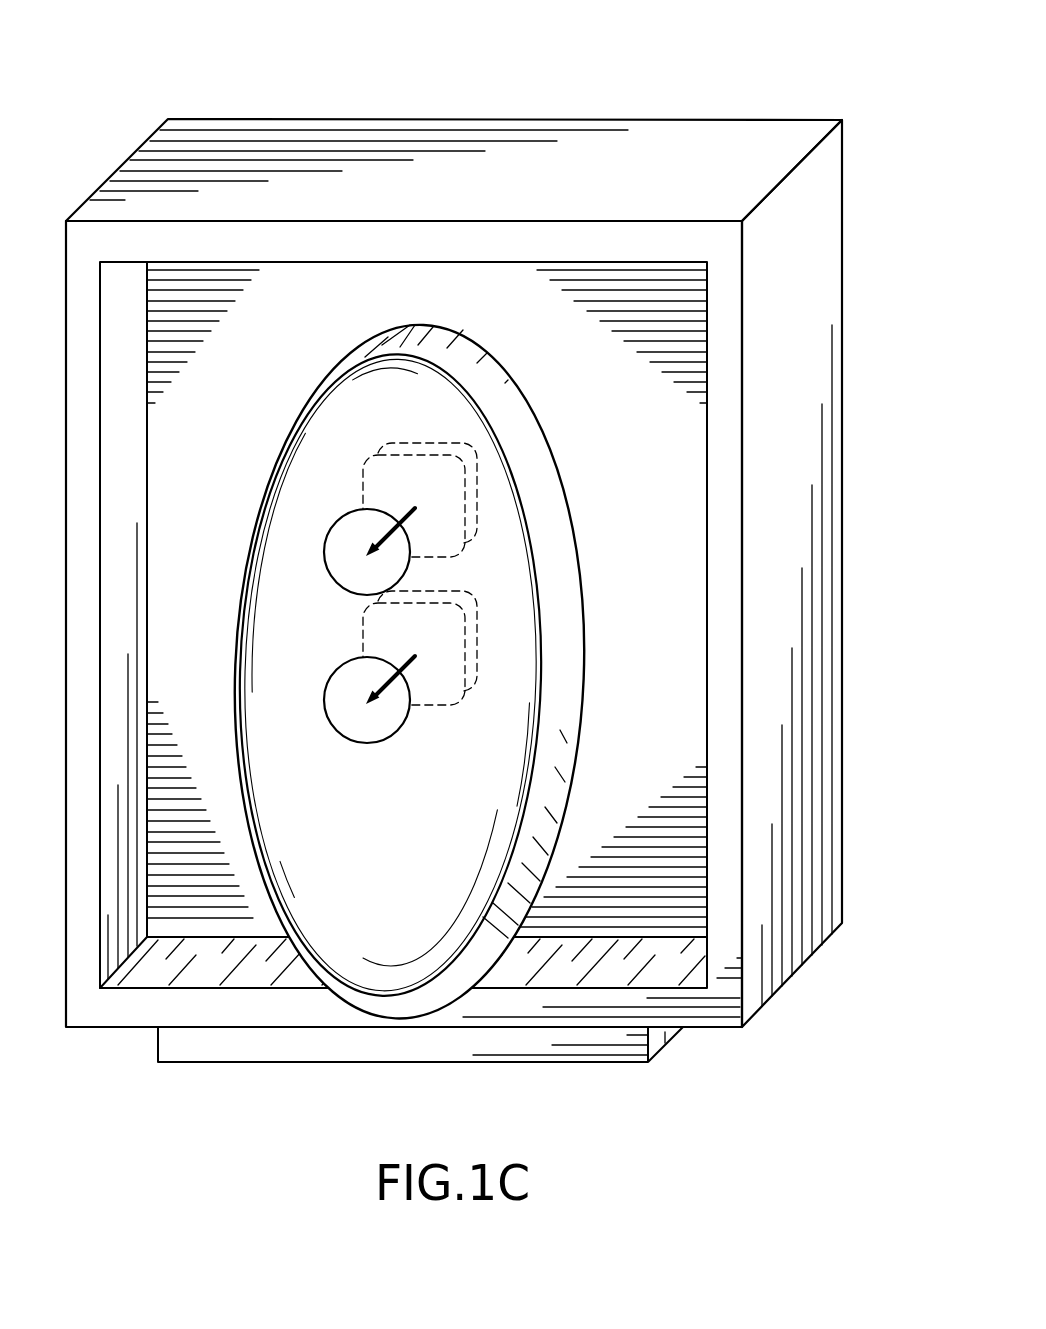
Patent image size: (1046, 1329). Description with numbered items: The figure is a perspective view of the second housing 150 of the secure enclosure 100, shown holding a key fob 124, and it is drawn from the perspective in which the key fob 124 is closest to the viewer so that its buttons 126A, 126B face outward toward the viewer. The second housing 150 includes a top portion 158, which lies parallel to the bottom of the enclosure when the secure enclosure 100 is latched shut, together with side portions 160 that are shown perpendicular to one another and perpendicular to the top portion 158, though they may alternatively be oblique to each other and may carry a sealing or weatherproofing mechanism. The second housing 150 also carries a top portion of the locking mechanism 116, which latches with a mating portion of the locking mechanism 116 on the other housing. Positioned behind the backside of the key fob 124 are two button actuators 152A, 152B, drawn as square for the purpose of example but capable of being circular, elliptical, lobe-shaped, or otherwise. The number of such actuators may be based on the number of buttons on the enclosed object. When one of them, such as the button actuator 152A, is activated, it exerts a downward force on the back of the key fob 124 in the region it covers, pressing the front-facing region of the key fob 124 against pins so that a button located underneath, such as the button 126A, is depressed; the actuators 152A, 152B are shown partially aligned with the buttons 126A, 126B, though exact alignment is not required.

The secure enclosure 100 is at (108, 106).
The locking mechanism 116 is at (358, 1065).
The key fob 124 is at (560, 553).
The button 126A is at (323, 548).
The button 126B is at (323, 703).
The second housing 150 is at (124, 1033).
The button actuator 152A is at (477, 507).
The button actuator 152B is at (480, 663).
The top portion 158 is at (657, 605).
The side portions 160 is at (463, 262).